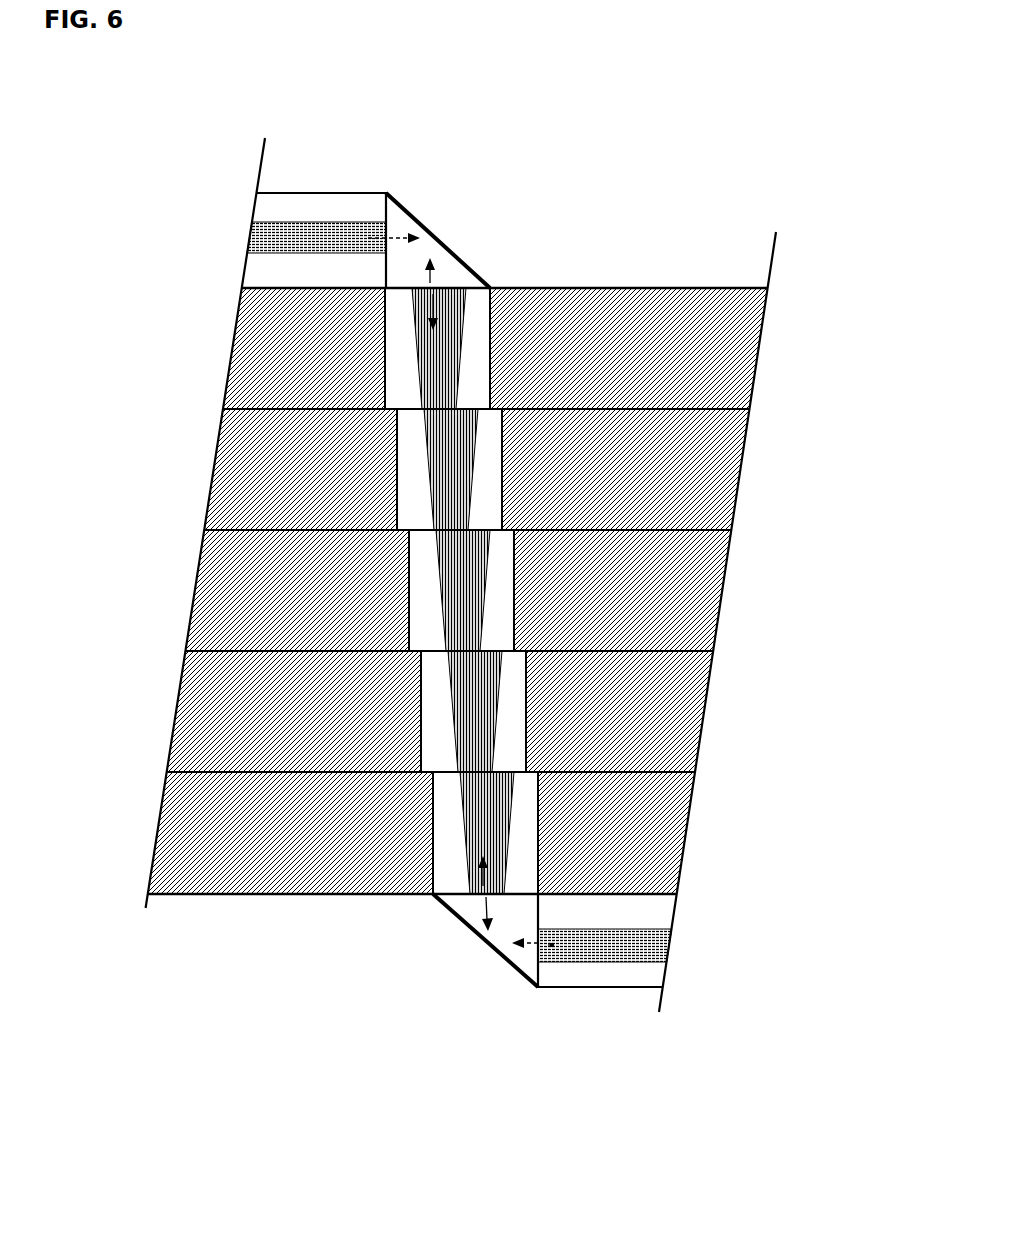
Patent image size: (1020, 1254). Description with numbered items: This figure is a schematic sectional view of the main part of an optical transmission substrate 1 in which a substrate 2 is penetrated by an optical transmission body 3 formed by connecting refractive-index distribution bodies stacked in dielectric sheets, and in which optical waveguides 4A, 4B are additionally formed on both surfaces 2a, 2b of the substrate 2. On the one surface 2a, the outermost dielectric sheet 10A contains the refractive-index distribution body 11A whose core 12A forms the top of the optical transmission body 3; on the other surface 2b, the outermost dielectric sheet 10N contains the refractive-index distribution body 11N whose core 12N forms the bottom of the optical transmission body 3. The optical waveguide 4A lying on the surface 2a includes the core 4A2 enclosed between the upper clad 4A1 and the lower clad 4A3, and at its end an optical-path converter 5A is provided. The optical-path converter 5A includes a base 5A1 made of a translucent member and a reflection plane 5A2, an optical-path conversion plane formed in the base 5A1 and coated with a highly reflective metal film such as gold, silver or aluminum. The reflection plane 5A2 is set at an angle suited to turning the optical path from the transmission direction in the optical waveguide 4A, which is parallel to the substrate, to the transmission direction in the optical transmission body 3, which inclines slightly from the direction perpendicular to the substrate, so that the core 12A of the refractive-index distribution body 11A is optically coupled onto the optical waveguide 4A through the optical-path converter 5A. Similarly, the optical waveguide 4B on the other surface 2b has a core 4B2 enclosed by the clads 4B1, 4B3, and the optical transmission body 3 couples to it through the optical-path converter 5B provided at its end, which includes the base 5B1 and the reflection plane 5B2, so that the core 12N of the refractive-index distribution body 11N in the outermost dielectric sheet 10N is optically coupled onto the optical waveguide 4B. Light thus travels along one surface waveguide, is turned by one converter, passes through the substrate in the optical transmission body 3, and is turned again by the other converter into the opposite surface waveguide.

The optical transmission substrate 1 is at (631, 190).
The substrate 2 is at (461, 585).
The one surface of the substrate 2a is at (536, 286).
The other surface of the substrate 2b is at (272, 895).
The optical transmission body 3 is at (474, 591).
The optical waveguide 4A is at (335, 172).
The upper clad 4A1 is at (280, 203).
The core 4A2 is at (304, 234).
The lower clad 4A3 is at (337, 270).
The optical-path converter 5A is at (454, 207).
The base 5A1 is at (396, 217).
The reflection plane 5A2 is at (454, 251).
The outermost dielectric sheet 10A is at (275, 312).
The refractive-index distribution body 11A is at (385, 347).
The core 12A is at (437, 389).
The outermost dielectric sheet 10N is at (625, 804).
The refractive-index distribution body 11N is at (538, 841).
The core 12N is at (498, 852).
The optical waveguide 4B is at (586, 1005).
The clad 4B1 is at (560, 974).
The core 4B2 is at (593, 952).
The clad 4B3 is at (633, 917).
The optical-path converter 5B is at (458, 969).
The base 5B1 is at (471, 912).
The reflection plane 5B2 is at (493, 951).